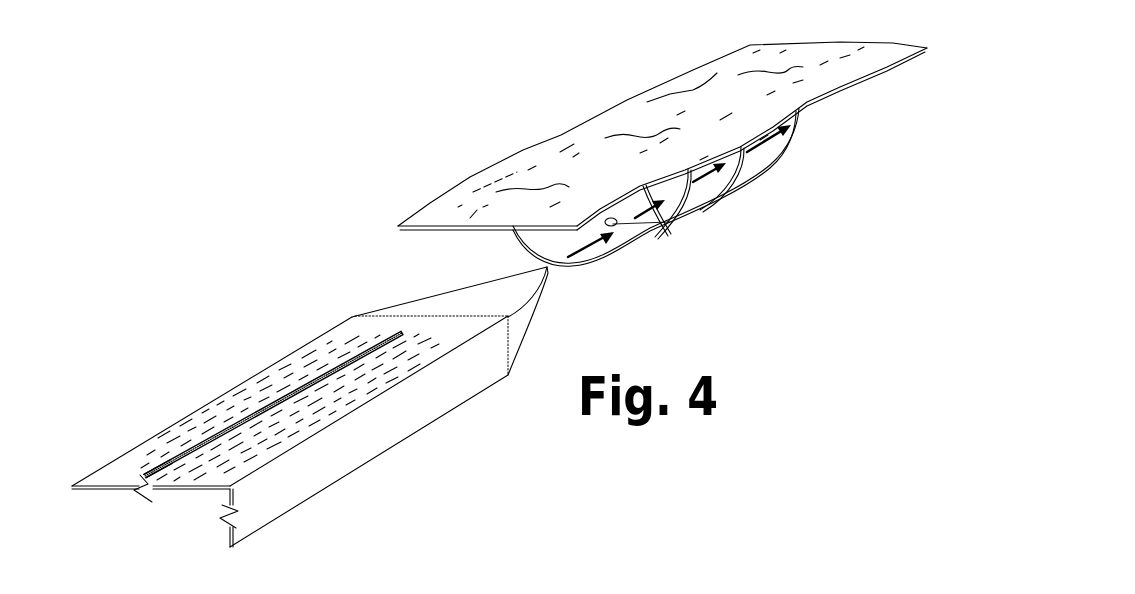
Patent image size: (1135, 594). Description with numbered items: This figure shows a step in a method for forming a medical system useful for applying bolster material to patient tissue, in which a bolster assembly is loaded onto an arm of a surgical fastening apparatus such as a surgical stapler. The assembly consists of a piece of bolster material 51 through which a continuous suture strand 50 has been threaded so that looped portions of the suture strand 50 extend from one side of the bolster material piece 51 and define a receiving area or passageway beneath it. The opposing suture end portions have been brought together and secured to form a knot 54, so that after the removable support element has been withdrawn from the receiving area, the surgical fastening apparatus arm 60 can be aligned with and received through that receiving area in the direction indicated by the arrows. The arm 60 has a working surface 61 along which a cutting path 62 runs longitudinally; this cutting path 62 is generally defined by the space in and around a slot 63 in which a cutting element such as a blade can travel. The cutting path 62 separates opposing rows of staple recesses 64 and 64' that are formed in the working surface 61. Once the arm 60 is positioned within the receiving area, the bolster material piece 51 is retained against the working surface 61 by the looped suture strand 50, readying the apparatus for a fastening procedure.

The continuous suture strand 50 is at (792, 155).
The bolster material piece 51 is at (560, 145).
The knot 54 is at (617, 226).
The surgical fastening apparatus arm 60 is at (170, 426).
The working surface 61 is at (287, 358).
The cutting path 62 is at (166, 466).
The slot 63 is at (385, 328).
The staple recesses 64 is at (260, 401).
The staple recesses 64' is at (298, 443).